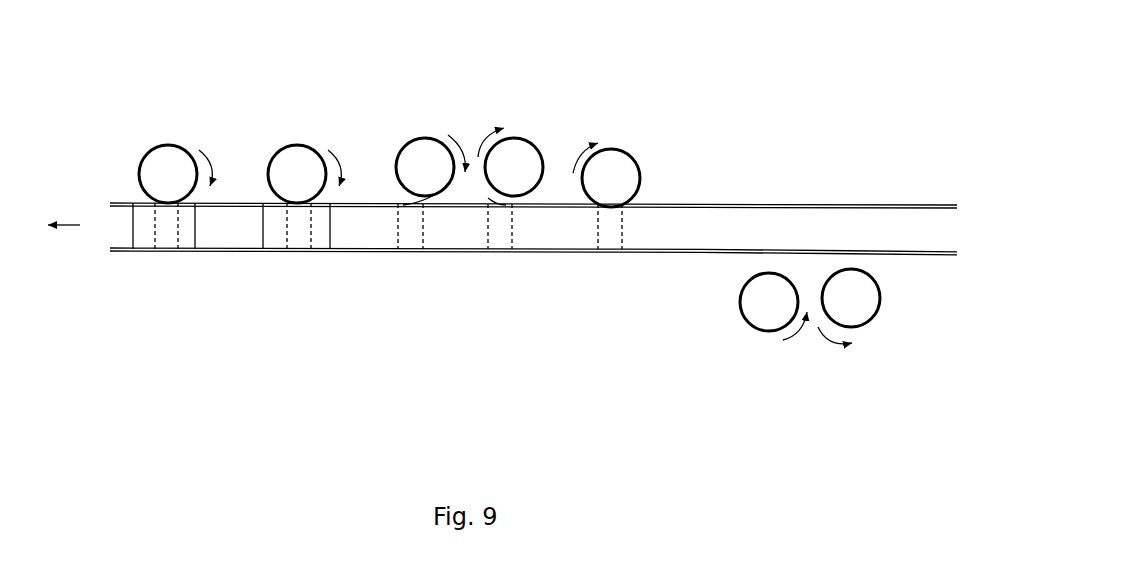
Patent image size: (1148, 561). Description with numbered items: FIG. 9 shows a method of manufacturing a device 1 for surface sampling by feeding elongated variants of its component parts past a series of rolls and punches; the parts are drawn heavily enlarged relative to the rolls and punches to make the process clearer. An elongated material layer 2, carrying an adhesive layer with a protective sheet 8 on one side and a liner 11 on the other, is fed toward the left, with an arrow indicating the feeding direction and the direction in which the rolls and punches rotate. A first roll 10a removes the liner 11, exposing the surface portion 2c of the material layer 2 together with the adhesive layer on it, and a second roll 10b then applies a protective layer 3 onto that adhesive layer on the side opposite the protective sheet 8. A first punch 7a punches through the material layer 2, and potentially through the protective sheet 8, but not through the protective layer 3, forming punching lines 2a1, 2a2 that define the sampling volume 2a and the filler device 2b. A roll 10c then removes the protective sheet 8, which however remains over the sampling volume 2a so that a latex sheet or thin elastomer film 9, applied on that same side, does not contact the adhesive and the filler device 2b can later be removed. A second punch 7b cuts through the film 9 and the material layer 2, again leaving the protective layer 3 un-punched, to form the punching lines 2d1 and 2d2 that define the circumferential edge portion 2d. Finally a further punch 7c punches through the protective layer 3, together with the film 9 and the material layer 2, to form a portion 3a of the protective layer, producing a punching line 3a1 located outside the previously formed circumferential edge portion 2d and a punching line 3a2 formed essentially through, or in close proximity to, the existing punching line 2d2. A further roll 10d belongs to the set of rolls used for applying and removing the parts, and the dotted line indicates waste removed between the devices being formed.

The device 1 is at (110, 188).
The material layer 2 is at (760, 227).
The sampling volume 2a is at (482, 270).
The punching line 2a1 is at (597, 232).
The punching line 2a2 is at (623, 254).
The filler device 2b is at (613, 243).
The surface portion 2c is at (698, 207).
The circumferential edge portion 2d is at (613, 197).
The punching line 2d1 is at (263, 251).
The punching line 2d2 is at (329, 251).
The protective layer 3 is at (452, 252).
The portion of the protective layer 3a is at (131, 251).
The punching line 3a1 is at (131, 251).
The punching line 3a2 is at (194, 251).
The first punch 7a is at (634, 157).
The second punch 7b is at (302, 146).
The third punch 7c is at (182, 146).
The protective sheet 8 is at (518, 205).
The latex sheet or thin elastomer film 9 is at (384, 204).
The first roll 10a is at (862, 327).
The second roll 10b is at (752, 328).
The roll 10c is at (522, 138).
The roll 10d is at (434, 139).
The liner 11 is at (902, 257).